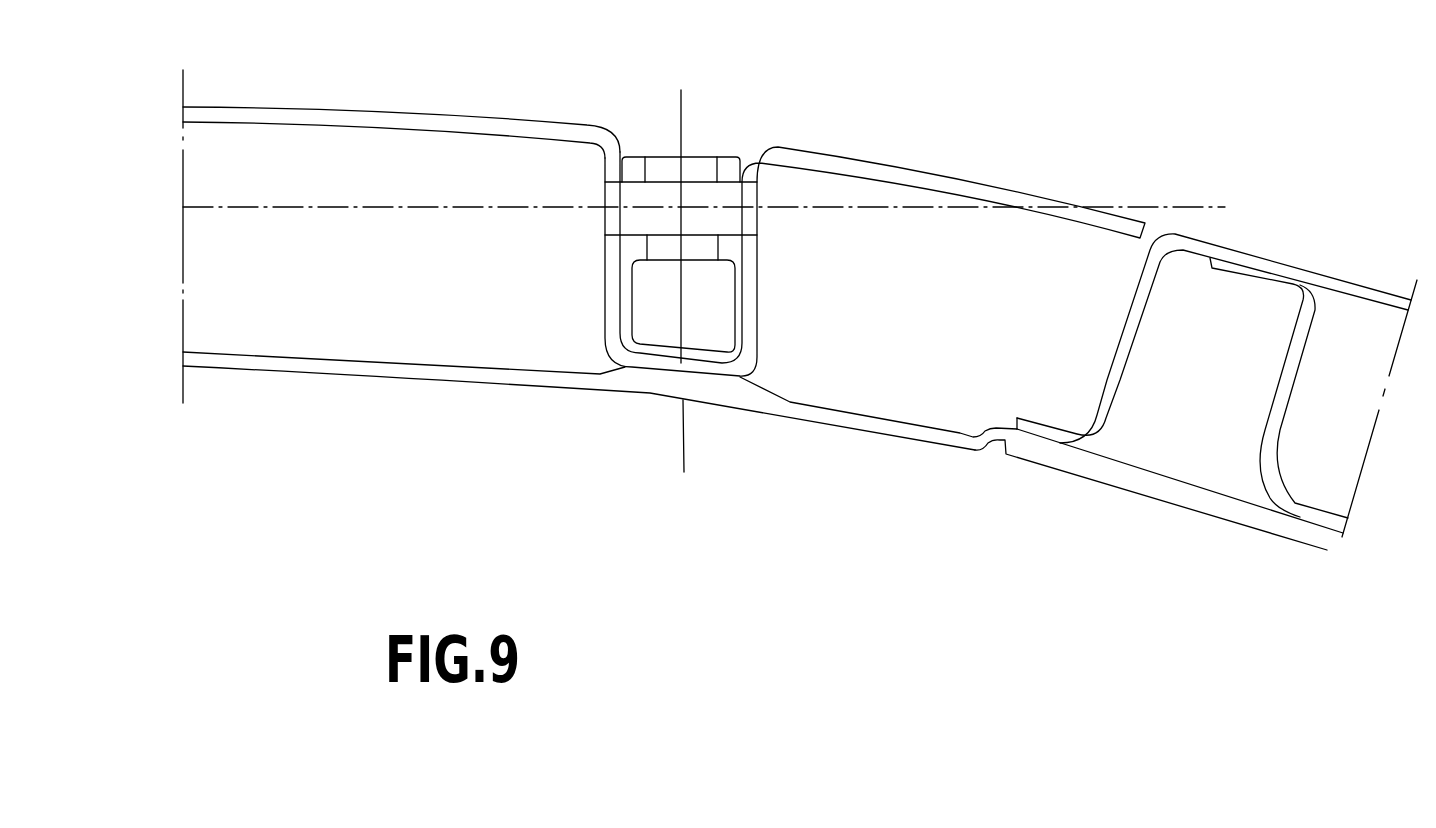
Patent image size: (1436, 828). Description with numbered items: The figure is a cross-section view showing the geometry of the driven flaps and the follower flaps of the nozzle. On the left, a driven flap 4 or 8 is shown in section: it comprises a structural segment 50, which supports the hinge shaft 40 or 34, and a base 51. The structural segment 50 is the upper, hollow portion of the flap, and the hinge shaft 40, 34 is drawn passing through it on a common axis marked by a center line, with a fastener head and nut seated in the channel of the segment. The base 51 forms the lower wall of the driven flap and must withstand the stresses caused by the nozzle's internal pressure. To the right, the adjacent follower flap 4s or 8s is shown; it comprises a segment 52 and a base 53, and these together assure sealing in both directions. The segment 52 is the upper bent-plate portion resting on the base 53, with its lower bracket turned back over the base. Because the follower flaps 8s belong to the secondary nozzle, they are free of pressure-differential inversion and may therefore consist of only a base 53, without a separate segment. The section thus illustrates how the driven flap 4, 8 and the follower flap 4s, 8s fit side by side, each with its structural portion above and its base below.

The driven flap 4 is at (579, 231).
The driven flap 8 is at (313, 98).
The follower flap 4s is at (1221, 352).
The follower flap 8s is at (1221, 352).
The hinge shaft 34 is at (677, 259).
The hinge shaft 40 is at (662, 187).
The structural segment 50 is at (515, 125).
The base 51 is at (797, 408).
The segment 52 is at (1230, 248).
The base 53 is at (1261, 522).